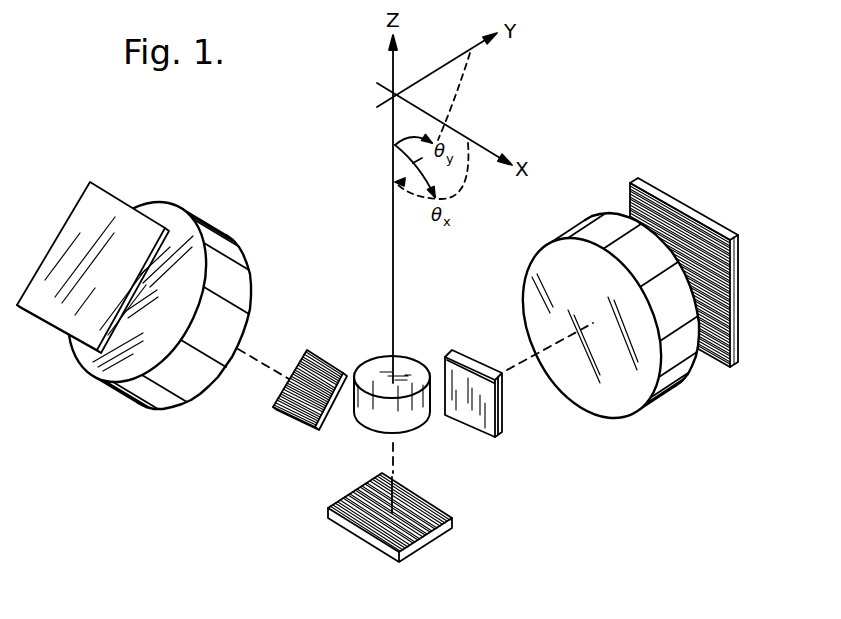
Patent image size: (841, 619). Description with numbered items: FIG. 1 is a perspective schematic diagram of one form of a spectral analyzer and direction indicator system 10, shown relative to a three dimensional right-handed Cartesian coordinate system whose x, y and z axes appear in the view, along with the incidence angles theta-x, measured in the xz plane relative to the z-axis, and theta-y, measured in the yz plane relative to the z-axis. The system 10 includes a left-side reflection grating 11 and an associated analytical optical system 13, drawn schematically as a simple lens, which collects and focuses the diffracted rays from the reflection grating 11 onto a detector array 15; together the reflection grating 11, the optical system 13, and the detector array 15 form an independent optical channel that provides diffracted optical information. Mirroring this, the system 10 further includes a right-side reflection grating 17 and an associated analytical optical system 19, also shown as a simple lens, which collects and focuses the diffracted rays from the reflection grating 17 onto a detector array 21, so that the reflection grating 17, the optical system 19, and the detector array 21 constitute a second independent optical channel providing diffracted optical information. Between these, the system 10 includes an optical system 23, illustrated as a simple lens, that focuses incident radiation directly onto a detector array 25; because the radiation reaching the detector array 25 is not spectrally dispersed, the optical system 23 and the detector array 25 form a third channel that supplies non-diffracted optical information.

The spectral analyzer and direction indicator system 10 is at (555, 478).
The left-side reflection grating 11 is at (308, 350).
The analytical optical system 13 is at (242, 247).
The detector array 15 is at (90, 182).
The right-side reflection grating 17 is at (502, 436).
The analytical optical system 19 is at (620, 418).
The detector array 21 is at (730, 368).
The optical system 23 is at (373, 355).
The detector array 25 is at (455, 532).